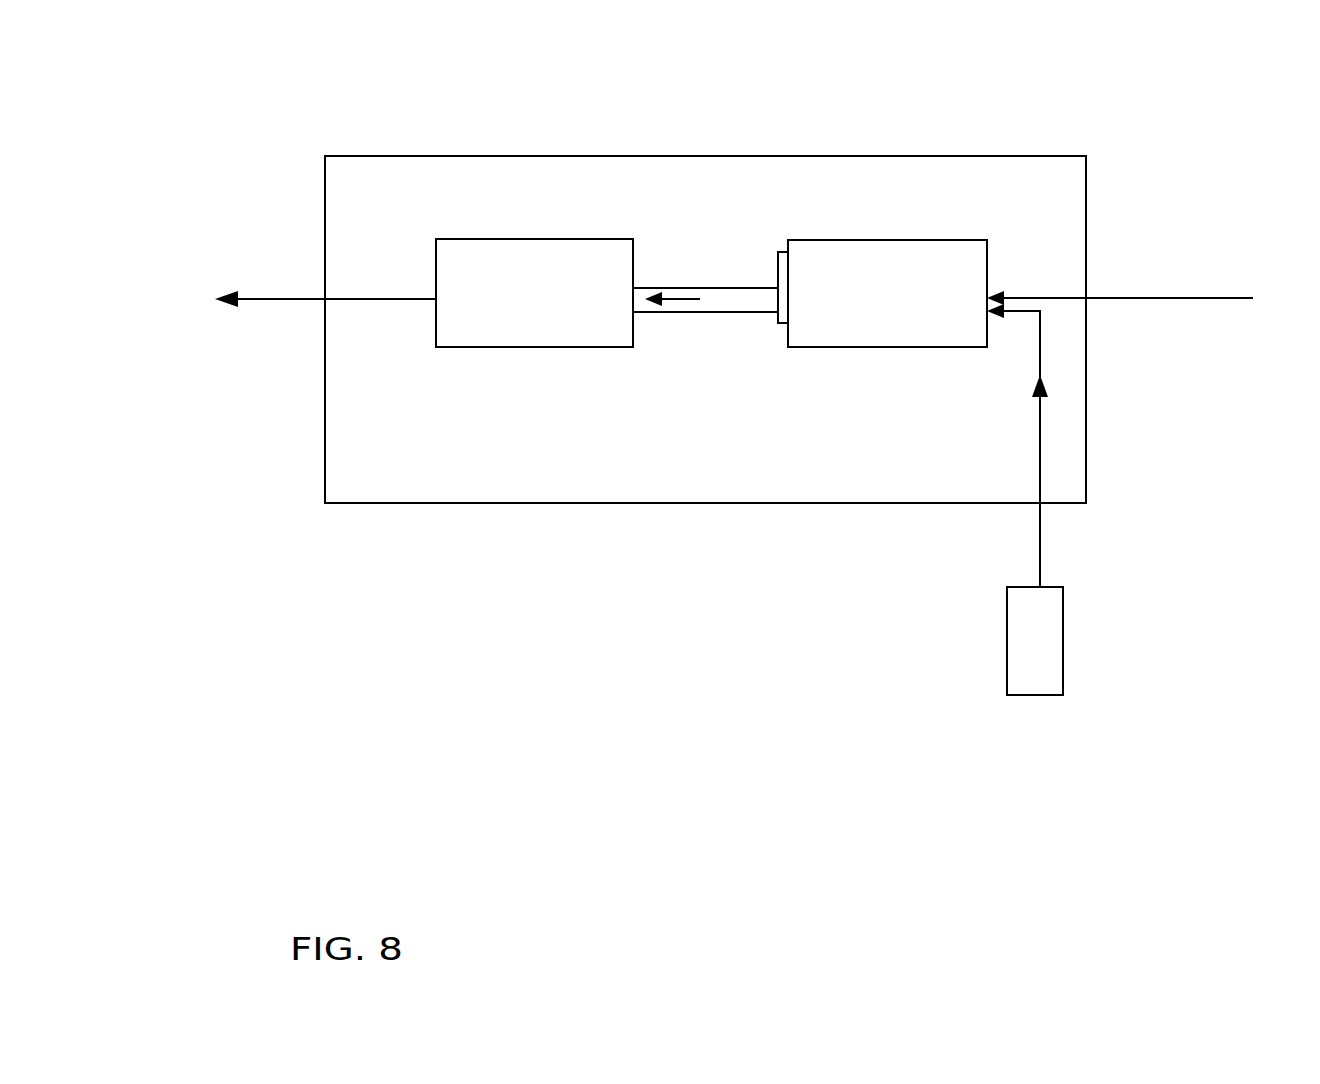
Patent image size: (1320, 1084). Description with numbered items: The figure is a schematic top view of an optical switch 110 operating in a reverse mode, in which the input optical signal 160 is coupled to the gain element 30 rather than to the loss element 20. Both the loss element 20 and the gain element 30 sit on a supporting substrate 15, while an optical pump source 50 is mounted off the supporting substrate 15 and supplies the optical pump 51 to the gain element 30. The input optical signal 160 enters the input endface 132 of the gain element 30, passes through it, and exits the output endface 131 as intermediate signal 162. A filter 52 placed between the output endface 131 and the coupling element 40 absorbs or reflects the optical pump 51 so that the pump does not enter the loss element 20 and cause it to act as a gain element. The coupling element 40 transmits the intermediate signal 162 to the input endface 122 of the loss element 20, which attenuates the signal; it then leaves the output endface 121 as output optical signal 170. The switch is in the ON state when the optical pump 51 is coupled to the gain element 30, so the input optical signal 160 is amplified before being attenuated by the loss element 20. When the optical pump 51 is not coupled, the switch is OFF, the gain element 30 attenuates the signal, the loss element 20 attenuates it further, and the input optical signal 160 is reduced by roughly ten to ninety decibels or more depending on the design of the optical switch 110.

The optical switch 110 is at (796, 875).
The supporting substrate 15 is at (457, 477).
The loss element 20 is at (602, 263).
The gain element 30 is at (952, 265).
The coupling element 40 is at (712, 312).
The filter 52 is at (783, 270).
The intermediate signal 162 is at (680, 300).
The output optical signal 170 is at (270, 299).
The input optical signal 160 is at (1152, 298).
The optical pump 51 is at (1040, 417).
The optical pump source 50 is at (1007, 637).
The output endface 121 is at (436, 312).
The input endface 122 is at (633, 302).
The output endface 131 is at (788, 302).
The input endface 132 is at (987, 322).